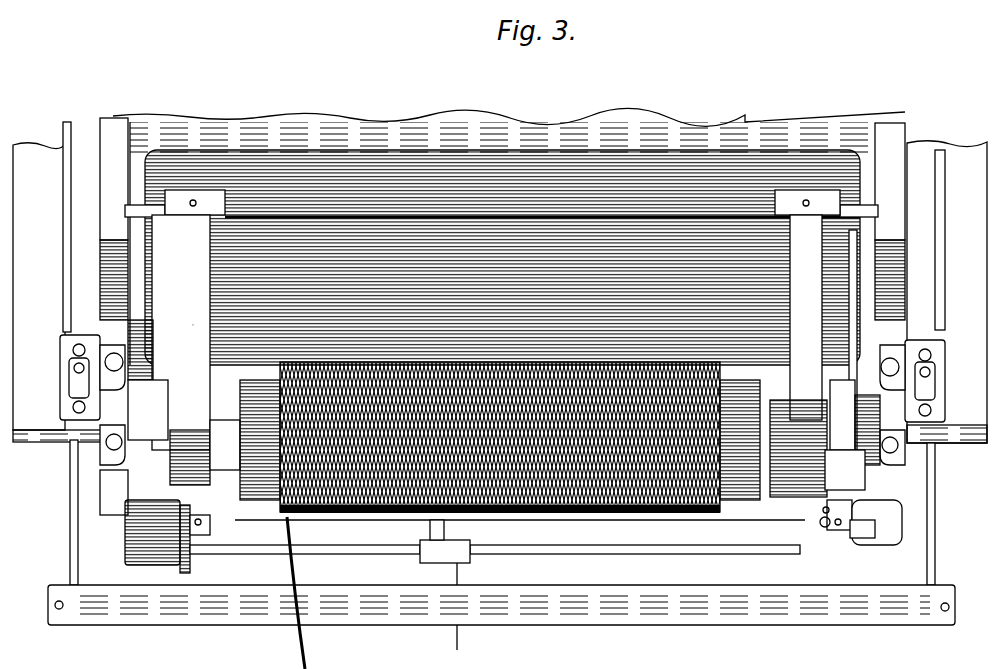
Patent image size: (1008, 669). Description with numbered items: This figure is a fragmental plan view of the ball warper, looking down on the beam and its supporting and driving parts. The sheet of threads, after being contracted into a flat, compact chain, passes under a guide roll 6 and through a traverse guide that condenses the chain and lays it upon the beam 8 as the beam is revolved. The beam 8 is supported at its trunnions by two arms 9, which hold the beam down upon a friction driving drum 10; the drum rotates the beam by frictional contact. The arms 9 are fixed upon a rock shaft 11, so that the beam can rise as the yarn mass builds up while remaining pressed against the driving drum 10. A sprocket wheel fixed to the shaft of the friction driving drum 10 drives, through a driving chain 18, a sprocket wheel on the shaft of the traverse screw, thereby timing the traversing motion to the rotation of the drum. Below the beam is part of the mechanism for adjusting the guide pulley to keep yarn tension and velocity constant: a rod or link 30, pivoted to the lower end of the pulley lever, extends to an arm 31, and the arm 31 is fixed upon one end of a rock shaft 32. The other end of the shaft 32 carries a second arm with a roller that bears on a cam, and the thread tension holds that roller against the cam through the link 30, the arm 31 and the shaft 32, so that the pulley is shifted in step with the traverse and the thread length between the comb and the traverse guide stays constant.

The guide roll 6 is at (684, 512).
The beam 8 is at (740, 498).
The arms 9 is at (496, 320).
The friction driving drum 10 is at (718, 160).
The rock shaft 11 is at (632, 215).
The driving chain 18 is at (842, 354).
The rod or link 30 is at (462, 637).
The arm 31 is at (468, 545).
The rock shaft 32 is at (360, 553).